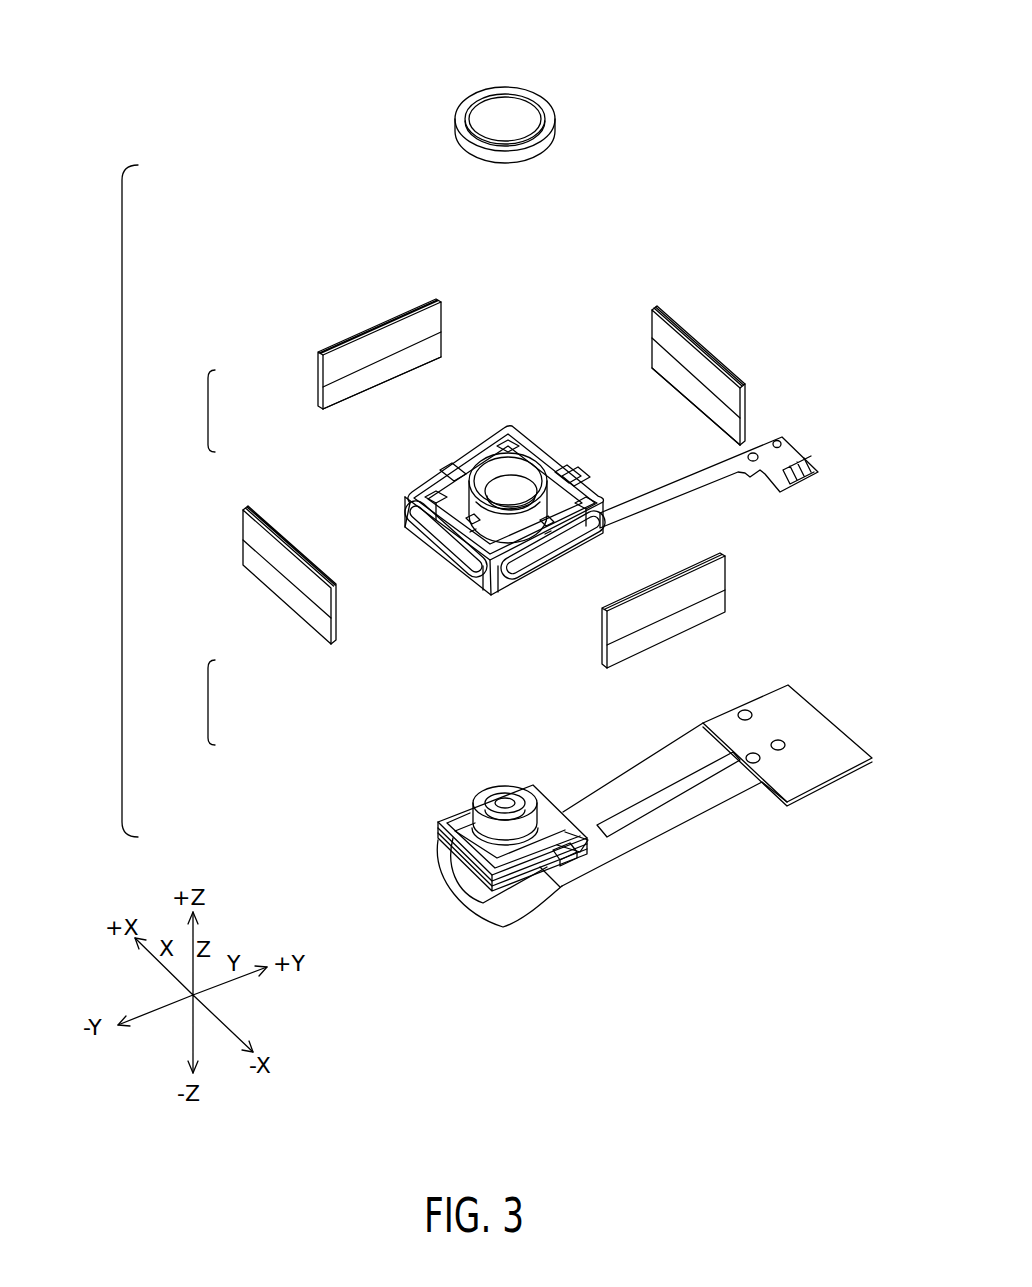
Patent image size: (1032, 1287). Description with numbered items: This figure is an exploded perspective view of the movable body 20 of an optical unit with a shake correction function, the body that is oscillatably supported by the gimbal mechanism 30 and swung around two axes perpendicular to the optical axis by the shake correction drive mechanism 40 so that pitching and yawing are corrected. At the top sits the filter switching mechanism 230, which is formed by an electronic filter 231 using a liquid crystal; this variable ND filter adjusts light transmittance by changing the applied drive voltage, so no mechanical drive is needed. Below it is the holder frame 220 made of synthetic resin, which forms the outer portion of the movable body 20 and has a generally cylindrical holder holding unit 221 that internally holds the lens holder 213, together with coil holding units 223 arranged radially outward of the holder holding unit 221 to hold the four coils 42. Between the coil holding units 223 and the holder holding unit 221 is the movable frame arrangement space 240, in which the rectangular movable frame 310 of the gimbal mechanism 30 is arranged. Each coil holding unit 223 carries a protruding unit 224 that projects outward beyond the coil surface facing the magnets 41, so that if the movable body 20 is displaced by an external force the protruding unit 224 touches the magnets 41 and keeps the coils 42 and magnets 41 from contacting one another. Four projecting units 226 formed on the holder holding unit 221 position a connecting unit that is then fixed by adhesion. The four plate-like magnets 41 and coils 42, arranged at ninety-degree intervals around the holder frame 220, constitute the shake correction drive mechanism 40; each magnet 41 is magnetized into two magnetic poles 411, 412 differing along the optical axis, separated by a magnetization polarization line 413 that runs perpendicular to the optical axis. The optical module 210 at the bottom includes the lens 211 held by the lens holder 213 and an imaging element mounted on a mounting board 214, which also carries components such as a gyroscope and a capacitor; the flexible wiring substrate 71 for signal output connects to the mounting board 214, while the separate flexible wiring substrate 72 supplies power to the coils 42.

The movable body 20 is at (120, 497).
The gimbal mechanism 30 is at (508, 472).
The movable frame 310 is at (558, 453).
The shake correction drive mechanism 40 is at (208, 411).
The magnet 41 is at (518, 453).
The magnetic pole 411 is at (653, 333).
The magnetic pole 412 is at (660, 400).
The magnetization polarization line 413 is at (657, 373).
The coil 42 is at (419, 562).
The flexible wiring substrate 71 is at (672, 822).
The flexible wiring substrate 72 is at (703, 483).
The optical module 210 is at (390, 851).
The lens 211 is at (508, 790).
The lens holder 213 is at (473, 793).
The mounting board 214 is at (597, 908).
The holder frame 220 is at (424, 597).
The holder holding unit 221 is at (440, 562).
The coil holding unit 223 is at (483, 597).
The protruding unit 224 is at (412, 538).
The projecting unit 226 is at (410, 518).
The filter switching mechanism 230 is at (383, 110).
The electronic filter 231 is at (441, 137).
The movable frame arrangement space 240 is at (620, 462).